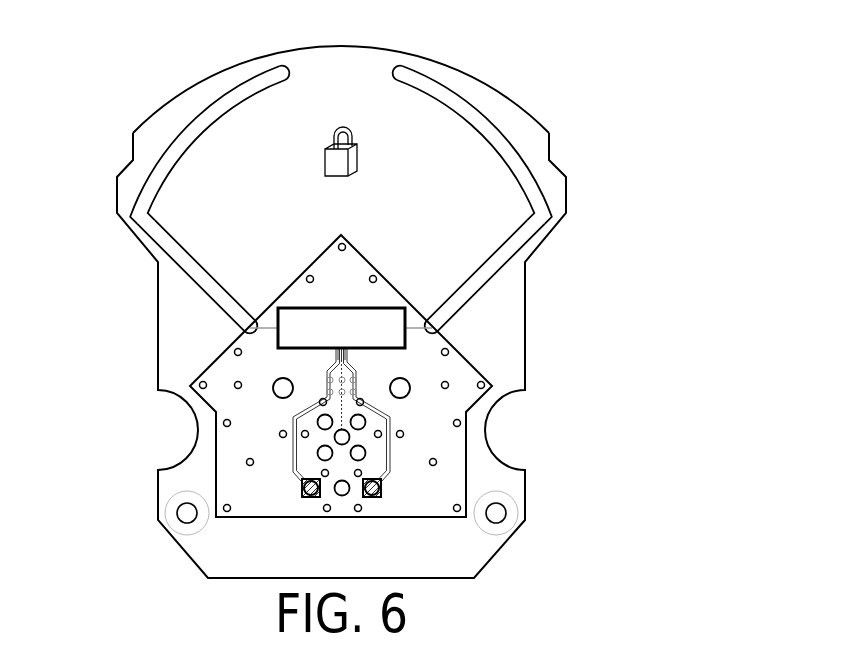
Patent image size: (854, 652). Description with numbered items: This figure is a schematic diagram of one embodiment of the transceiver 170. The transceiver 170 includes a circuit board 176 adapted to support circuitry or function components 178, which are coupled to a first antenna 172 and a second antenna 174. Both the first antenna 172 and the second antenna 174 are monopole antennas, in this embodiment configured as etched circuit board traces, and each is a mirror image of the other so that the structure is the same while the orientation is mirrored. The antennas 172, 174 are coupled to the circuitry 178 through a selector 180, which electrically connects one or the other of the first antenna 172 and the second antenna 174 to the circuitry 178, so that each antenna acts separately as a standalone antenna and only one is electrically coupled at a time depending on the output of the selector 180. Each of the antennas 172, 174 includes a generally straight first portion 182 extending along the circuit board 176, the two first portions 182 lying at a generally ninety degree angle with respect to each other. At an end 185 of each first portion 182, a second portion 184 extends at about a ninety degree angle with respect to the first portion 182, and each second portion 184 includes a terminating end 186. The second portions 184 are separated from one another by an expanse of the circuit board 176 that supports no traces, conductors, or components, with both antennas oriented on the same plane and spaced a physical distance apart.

The transceiver 170 is at (413, 289).
The first antenna 172 is at (166, 147).
The second antenna 174 is at (518, 147).
The circuit board 176 is at (522, 115).
The circuitry 178 is at (296, 376).
The selector 180 is at (378, 318).
The first portion 182 is at (163, 243).
The second portion 184 is at (342, 119).
The end 185 is at (120, 213).
The terminating end 186 is at (281, 63).